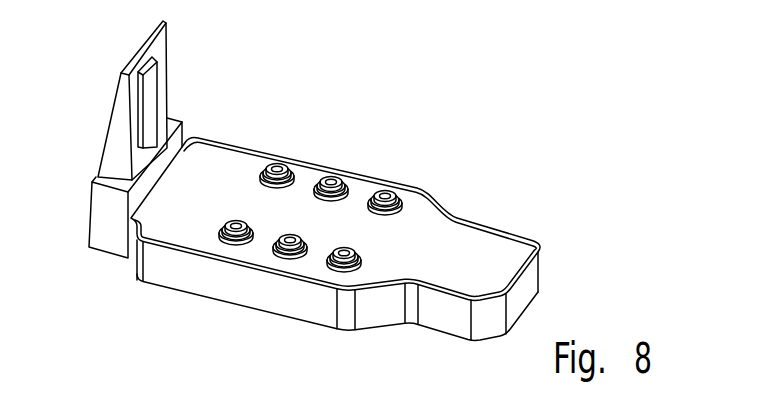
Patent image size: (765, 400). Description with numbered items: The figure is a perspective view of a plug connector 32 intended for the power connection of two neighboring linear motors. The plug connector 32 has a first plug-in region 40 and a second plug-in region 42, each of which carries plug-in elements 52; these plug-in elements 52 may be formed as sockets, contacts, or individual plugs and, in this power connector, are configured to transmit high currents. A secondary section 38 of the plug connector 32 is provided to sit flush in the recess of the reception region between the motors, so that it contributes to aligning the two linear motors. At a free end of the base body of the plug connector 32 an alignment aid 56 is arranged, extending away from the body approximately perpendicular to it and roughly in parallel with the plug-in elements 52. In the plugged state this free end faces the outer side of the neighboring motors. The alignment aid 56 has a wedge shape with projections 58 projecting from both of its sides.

The plug connector 32 is at (418, 230).
The secondary section 38 is at (502, 255).
The first plug-in region 40 is at (306, 181).
The second plug-in region 42 is at (257, 252).
The plug-in elements 52 is at (387, 199).
The alignment aid 56 is at (115, 133).
The projections 58 is at (130, 56).